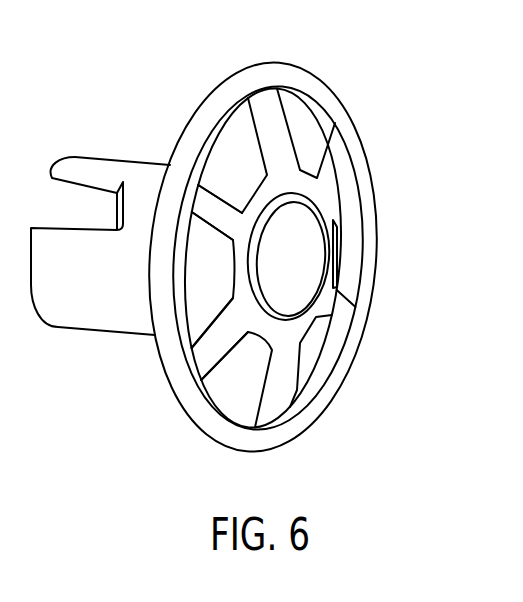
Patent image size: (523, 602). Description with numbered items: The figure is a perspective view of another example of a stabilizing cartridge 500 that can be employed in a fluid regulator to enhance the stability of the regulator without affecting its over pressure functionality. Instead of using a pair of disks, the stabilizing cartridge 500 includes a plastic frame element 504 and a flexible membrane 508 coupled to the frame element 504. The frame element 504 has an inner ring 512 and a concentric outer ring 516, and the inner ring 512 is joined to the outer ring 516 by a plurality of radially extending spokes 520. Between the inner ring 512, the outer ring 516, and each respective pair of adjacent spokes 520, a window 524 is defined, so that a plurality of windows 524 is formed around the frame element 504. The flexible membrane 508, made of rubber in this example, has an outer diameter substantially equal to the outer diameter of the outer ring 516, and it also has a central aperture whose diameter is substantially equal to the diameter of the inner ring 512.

The stabilizing cartridge 500 is at (412, 72).
The frame element 504 is at (337, 366).
The flexible membrane 508 is at (238, 158).
The inner ring 512 is at (318, 318).
The outer ring 516 is at (245, 88).
The spokes 520 is at (337, 170).
The windows 524 is at (196, 290).